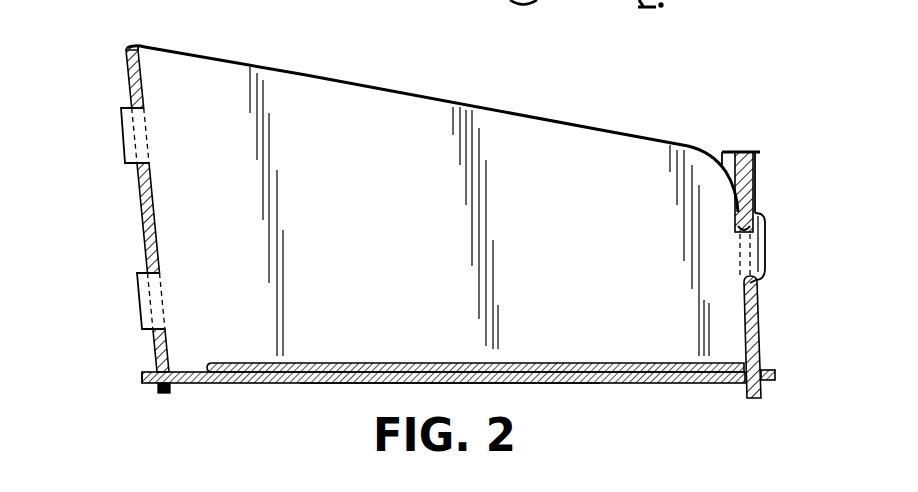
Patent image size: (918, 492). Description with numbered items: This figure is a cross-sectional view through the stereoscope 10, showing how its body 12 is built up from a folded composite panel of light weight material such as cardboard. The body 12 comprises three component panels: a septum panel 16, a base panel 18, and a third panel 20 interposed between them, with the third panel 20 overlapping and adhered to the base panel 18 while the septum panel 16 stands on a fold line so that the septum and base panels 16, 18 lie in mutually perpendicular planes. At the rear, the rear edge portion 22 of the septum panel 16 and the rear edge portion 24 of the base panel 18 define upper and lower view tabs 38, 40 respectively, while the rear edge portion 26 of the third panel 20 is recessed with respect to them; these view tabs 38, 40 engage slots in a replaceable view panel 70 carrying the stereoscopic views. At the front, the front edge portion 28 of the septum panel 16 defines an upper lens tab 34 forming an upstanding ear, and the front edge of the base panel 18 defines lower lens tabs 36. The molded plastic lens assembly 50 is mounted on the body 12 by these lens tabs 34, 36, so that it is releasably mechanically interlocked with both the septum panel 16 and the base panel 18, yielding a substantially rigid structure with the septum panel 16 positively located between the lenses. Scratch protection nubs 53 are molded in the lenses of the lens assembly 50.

The stereoscope 10 is at (599, 120).
The body 12 is at (313, 74).
The septum panel 16 is at (401, 197).
The base panel 18 is at (588, 384).
The third panel 20 is at (561, 371).
The rear edge portion of the septum panel 22 is at (165, 208).
The rear edge portion of the base panel 24 is at (183, 384).
The rear edge portion of the third panel 26 is at (207, 363).
The front edge portion of the septum panel 28 is at (735, 313).
The upper lens tab 34 is at (765, 248).
The lower lens tabs 36 is at (764, 380).
The upper view tabs 38 is at (128, 137).
The lower view tabs 40 is at (142, 377).
The lens assembly 50 is at (785, 188).
The scratch protection nubs 53 is at (760, 155).
The view panel 70 is at (127, 60).